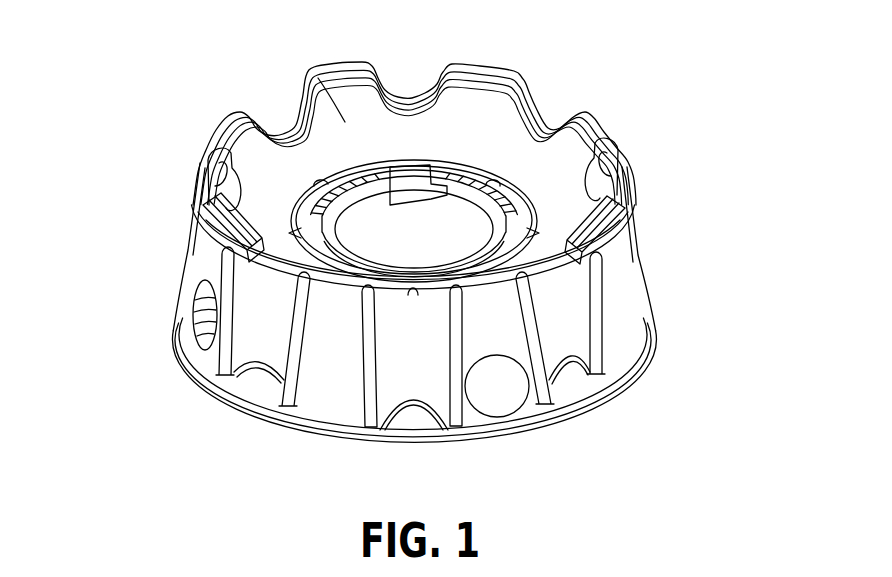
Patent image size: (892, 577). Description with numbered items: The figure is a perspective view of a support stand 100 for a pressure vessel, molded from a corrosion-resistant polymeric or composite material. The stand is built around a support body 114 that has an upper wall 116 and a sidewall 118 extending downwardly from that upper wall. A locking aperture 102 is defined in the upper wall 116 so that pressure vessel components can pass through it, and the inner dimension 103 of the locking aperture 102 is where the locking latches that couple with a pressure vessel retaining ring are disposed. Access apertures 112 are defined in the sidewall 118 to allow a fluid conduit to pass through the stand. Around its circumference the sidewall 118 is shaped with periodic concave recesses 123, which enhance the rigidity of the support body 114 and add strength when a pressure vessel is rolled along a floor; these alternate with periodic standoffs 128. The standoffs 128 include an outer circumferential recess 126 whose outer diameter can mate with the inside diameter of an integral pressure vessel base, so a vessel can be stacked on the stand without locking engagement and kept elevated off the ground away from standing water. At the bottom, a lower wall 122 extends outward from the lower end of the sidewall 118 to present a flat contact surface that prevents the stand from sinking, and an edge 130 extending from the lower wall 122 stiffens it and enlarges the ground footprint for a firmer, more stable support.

The support stand 100 is at (627, 80).
The locking aperture 102 is at (463, 218).
The inner dimension 103 is at (412, 175).
The access apertures 112 is at (207, 343).
The support body 114 is at (182, 138).
The upper wall 116 is at (350, 118).
The sidewall 118 is at (617, 295).
The lower wall 122 is at (263, 388).
The concave recesses 123 is at (257, 290).
The outer circumferential recess 126 is at (330, 300).
The standoffs 128 is at (212, 198).
The edge 130 is at (467, 443).